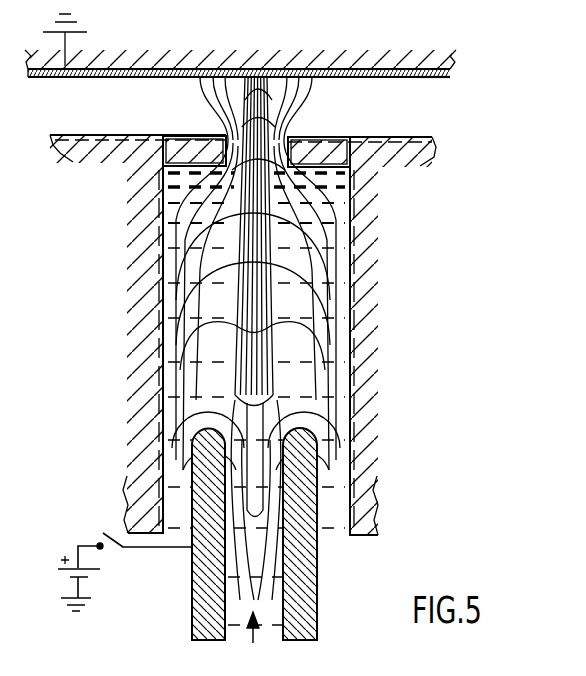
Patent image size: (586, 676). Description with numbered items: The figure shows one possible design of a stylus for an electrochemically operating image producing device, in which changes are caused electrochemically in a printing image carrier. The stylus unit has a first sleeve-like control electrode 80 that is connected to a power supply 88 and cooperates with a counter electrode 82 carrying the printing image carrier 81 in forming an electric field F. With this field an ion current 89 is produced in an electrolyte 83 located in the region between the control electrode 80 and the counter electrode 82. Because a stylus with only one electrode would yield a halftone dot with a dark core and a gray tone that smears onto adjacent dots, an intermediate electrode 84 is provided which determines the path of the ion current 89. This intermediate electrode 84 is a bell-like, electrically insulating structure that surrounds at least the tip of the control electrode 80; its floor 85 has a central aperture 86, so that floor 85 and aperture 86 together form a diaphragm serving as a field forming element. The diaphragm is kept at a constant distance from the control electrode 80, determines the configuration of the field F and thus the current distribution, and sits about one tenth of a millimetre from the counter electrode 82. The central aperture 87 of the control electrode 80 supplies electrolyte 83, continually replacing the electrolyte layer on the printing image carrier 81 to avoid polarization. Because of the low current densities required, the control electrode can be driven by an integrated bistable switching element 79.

The bistable switching element 79 is at (104, 531).
The control electrode 80 is at (297, 573).
The printing image carrier 81 is at (438, 80).
The counter electrode 82 is at (417, 65).
The electrolyte 83 is at (306, 245).
The intermediate electrode 84 is at (124, 160).
The floor 85 is at (185, 152).
The central aperture 86 is at (226, 138).
The central aperture of the control electrode 87 is at (233, 633).
The power supply 88 is at (57, 567).
The ion current 89 is at (325, 77).
The electric field F is at (273, 100).